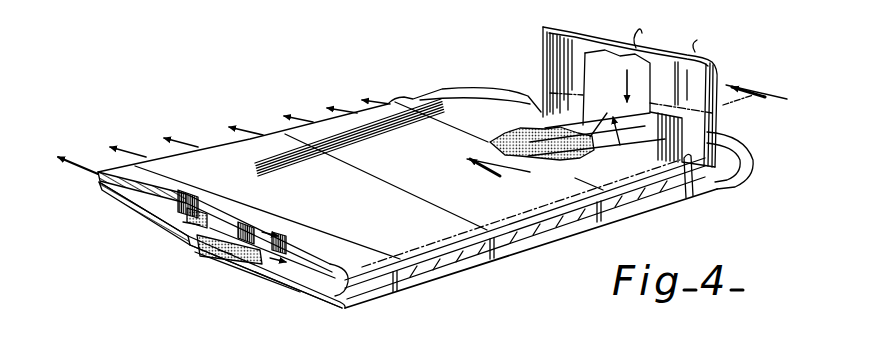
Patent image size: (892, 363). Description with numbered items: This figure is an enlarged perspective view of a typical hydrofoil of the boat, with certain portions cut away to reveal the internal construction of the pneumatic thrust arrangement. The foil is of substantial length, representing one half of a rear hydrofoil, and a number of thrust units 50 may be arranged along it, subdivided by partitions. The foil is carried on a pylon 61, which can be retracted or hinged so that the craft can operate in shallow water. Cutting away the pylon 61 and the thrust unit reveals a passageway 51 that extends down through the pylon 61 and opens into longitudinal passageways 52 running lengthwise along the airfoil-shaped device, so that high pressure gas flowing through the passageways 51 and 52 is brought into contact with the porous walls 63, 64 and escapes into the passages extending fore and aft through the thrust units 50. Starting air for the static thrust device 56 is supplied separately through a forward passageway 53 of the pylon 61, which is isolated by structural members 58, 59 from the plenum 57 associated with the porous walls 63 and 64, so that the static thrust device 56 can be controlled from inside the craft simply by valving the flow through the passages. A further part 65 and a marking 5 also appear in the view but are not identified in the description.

The thrust unit 50 is at (517, 238).
The passageway 51 is at (636, 46).
The longitudinal passageway 52 is at (680, 198).
The forward passageway 53 is at (696, 50).
The static thrust device 56 is at (347, 276).
The plenum 57 is at (263, 276).
The structural member 58 is at (290, 240).
The structural member 59 is at (288, 284).
The pylon 61 is at (722, 76).
The porous wall 63 is at (183, 245).
The porous wall 64 is at (212, 242).
The lower surface skin 65 is at (300, 298).
The section line indicator 5 is at (633, 138).